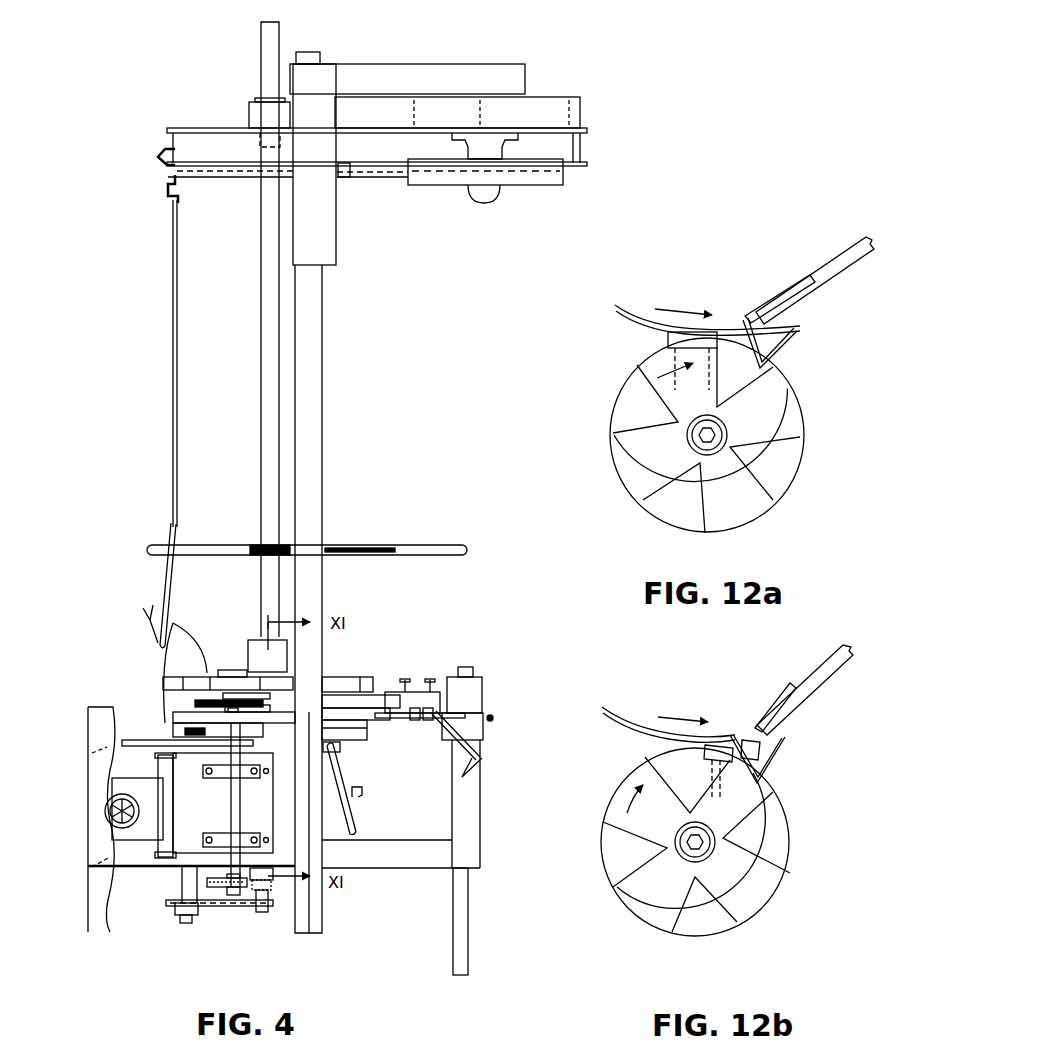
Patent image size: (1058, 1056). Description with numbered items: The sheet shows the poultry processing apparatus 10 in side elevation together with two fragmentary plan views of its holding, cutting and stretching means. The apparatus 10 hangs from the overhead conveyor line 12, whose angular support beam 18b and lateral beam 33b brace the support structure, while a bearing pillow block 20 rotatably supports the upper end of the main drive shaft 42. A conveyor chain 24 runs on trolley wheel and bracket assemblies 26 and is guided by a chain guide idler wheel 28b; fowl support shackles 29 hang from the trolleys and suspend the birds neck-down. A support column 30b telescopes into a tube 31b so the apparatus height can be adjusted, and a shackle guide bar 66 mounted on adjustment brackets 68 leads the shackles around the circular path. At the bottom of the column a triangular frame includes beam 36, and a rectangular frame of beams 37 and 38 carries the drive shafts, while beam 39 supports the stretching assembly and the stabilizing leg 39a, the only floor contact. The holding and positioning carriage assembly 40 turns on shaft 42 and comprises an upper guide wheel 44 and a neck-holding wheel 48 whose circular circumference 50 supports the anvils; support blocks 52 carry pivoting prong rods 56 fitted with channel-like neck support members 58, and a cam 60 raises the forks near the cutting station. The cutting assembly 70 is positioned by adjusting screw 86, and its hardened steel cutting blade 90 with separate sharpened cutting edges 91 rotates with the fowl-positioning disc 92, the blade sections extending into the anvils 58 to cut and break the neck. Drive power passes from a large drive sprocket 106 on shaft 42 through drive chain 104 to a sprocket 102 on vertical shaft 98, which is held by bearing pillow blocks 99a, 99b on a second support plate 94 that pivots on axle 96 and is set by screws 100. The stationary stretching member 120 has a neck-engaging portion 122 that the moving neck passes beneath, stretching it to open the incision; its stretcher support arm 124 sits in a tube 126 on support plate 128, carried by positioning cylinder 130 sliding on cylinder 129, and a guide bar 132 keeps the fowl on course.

In FIG. 4, the poultry processing apparatus 10 is at (197, 46).
In FIG. 4, the overhead conveyor poultry processing line 12 is at (187, 124).
In FIG. 4, the angular support beam 18b is at (550, 115).
In FIG. 4, the bearing pillow block 20 is at (257, 115).
In FIG. 4, the conveyor chain 24 is at (228, 173).
In FIG. 4, the trolley wheel and bracket assembly 26 is at (170, 147).
In FIG. 4, the chain guide idler wheel 28b is at (538, 187).
In FIG. 4, the fowl support shackle 29 is at (170, 347).
In FIG. 4, the support column 30b is at (310, 435).
In FIG. 4, the tube 31b is at (325, 227).
In FIG. 4, the lateral beam 33b is at (470, 75).
In FIG. 4, the beam 36 is at (135, 858).
In FIG. 4, the beam 37 is at (100, 788).
In FIG. 4, the beam 38 is at (118, 763).
In FIG. 4, the beam 39 is at (415, 862).
In FIG. 4, the stabilizing leg 39a is at (462, 930).
In FIG. 4, the holding and positioning carriage assembly 40 is at (402, 752).
In FIG. 12a, the holding and positioning carriage assembly 40 is at (640, 323).
In FIG. 12b, the holding and positioning carriage assembly 40 is at (635, 732).
In FIG. 4, the main drive shaft 42 is at (270, 418).
In FIG. 4, the upper guide wheel 44 is at (230, 670).
In FIG. 4, the neck-holding wheel 48 is at (337, 720).
In FIG. 4, the circular circumference 50 is at (363, 733).
In FIG. 4, the support block 52 is at (340, 743).
In FIG. 4, the prong rod 56 is at (355, 822).
In FIG. 4, the neck support member 58 is at (353, 785).
In FIG. 12a, the neck support member 58 is at (717, 332).
In FIG. 12b, the neck support member 58 is at (723, 740).
In FIG. 4, the cam 60 is at (343, 828).
In FIG. 4, the shackle guide bar 66 is at (215, 548).
In FIG. 4, the adjustment bracket 68 is at (280, 543).
In FIG. 4, the rotating cutting blade assembly 70 is at (120, 727).
In FIG. 4, the adjusting screw 86 is at (110, 813).
In FIG. 12a, the cutting blade 90 is at (707, 435).
In FIG. 12b, the cutting blade 90 is at (695, 842).
In FIG. 12a, the cutting edge 91 is at (622, 473).
In FIG. 12b, the cutting edge 91 is at (630, 913).
In FIG. 12a, the fowl-positioning disc 92 is at (780, 465).
In FIG. 12b, the fowl-positioning disc 92 is at (768, 822).
In FIG. 4, the second vertical support plate 94 is at (223, 803).
In FIG. 4, the axle 96 is at (165, 812).
In FIG. 4, the vertical shaft 98 is at (233, 810).
In FIG. 4, the bearing pillow block 99a is at (227, 773).
In FIG. 4, the bearing pillow block 99b is at (242, 838).
In FIG. 4, the screw 100 is at (193, 715).
In FIG. 4, the sprocket 102 is at (268, 770).
In FIG. 4, the drive chain 104 is at (220, 907).
In FIG. 4, the drive sprocket 106 is at (182, 905).
In FIG. 12a, the stretching member 120 is at (790, 348).
In FIG. 12b, the stretching member 120 is at (782, 752).
In FIG. 12a, the neck-engaging portion 122 is at (768, 300).
In FIG. 12b, the neck-engaging portion 122 is at (767, 768).
In FIG. 12a, the stretcher support arm 124 is at (830, 277).
In FIG. 12b, the stretcher support arm 124 is at (818, 665).
In FIG. 4, the tube 126 is at (412, 697).
In FIG. 4, the support plate 128 is at (428, 720).
In FIG. 4, the cylinder 129 is at (470, 698).
In FIG. 4, the positioning cylinder 130 is at (477, 735).
In FIG. 4, the guide bar 132 is at (472, 767).